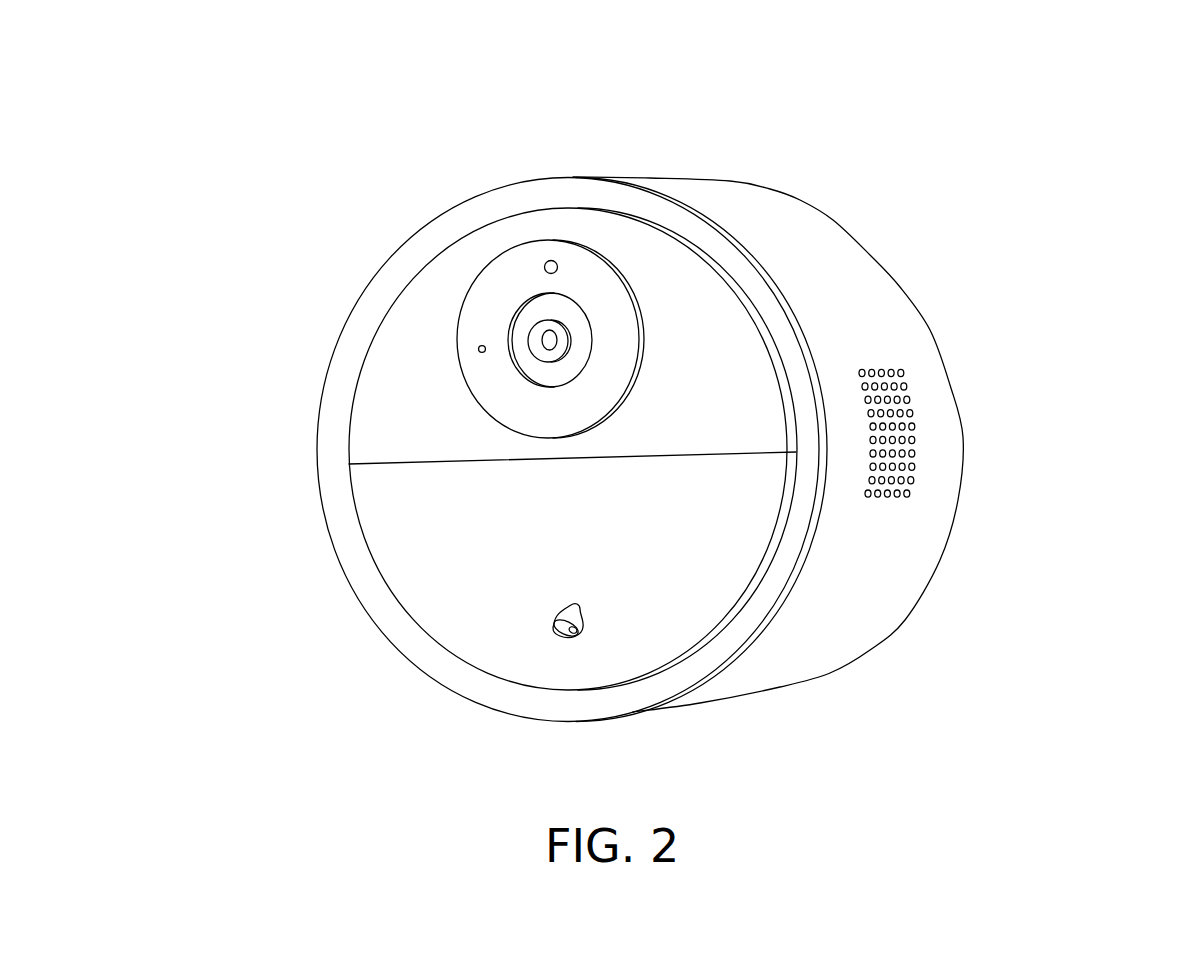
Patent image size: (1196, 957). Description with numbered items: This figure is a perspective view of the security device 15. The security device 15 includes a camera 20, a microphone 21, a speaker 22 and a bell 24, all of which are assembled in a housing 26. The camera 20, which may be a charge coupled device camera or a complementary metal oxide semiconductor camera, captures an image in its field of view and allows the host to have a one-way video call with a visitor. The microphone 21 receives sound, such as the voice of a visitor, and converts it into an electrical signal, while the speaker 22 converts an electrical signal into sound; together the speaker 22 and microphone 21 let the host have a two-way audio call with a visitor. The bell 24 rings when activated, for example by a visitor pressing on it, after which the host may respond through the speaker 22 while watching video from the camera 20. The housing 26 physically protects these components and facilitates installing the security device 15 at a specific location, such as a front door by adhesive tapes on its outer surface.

The security device 15 is at (708, 388).
The camera 20 is at (523, 317).
The microphone 21 is at (478, 349).
The speaker 22 is at (915, 427).
The bell 24 is at (424, 617).
The housing 26 is at (720, 180).